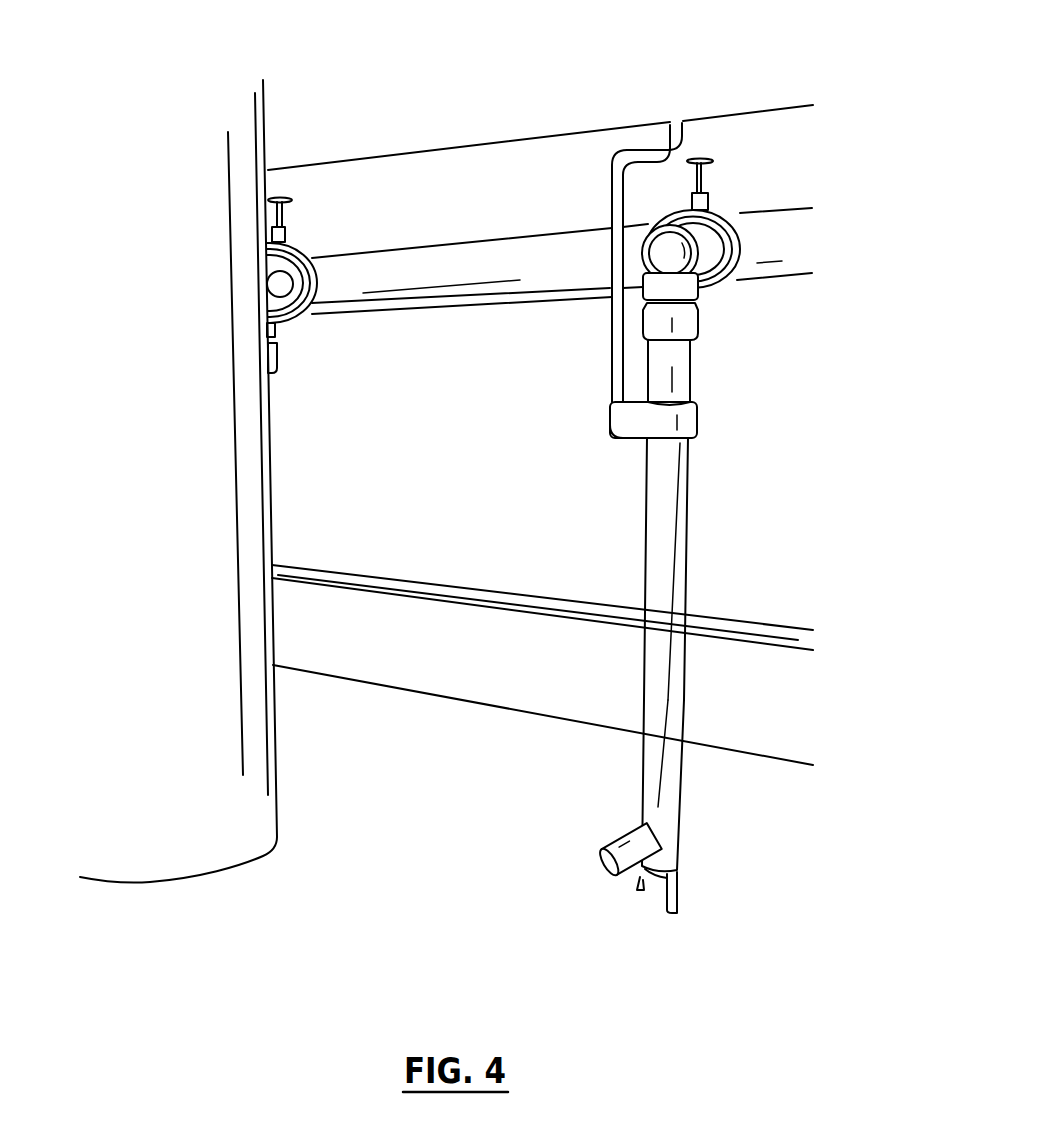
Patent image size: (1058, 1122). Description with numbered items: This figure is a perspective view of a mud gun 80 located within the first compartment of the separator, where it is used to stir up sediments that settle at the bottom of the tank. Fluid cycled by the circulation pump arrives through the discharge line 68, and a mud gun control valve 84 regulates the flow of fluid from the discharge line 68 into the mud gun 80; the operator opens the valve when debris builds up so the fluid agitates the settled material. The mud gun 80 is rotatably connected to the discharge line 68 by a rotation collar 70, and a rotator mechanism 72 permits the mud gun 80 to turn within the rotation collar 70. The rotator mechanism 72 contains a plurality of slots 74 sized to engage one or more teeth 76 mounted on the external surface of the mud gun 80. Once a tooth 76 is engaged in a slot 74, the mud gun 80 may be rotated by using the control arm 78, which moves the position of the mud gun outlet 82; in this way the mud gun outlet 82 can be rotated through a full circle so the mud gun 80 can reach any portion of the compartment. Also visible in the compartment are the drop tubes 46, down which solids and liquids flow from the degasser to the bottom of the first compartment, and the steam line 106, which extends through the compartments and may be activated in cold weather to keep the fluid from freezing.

The drop tubes 46 is at (253, 838).
The discharge line 68 is at (780, 245).
The rotation collar 70 is at (697, 328).
The rotator mechanism 72 is at (695, 403).
The slots 74 is at (637, 423).
The teeth 76 is at (688, 465).
The control arm 78 is at (650, 150).
The mud gun 80 is at (673, 772).
The mud gun outlet 82 is at (603, 865).
The mud gun control valve 84 is at (280, 283).
The steam line 106 is at (805, 637).